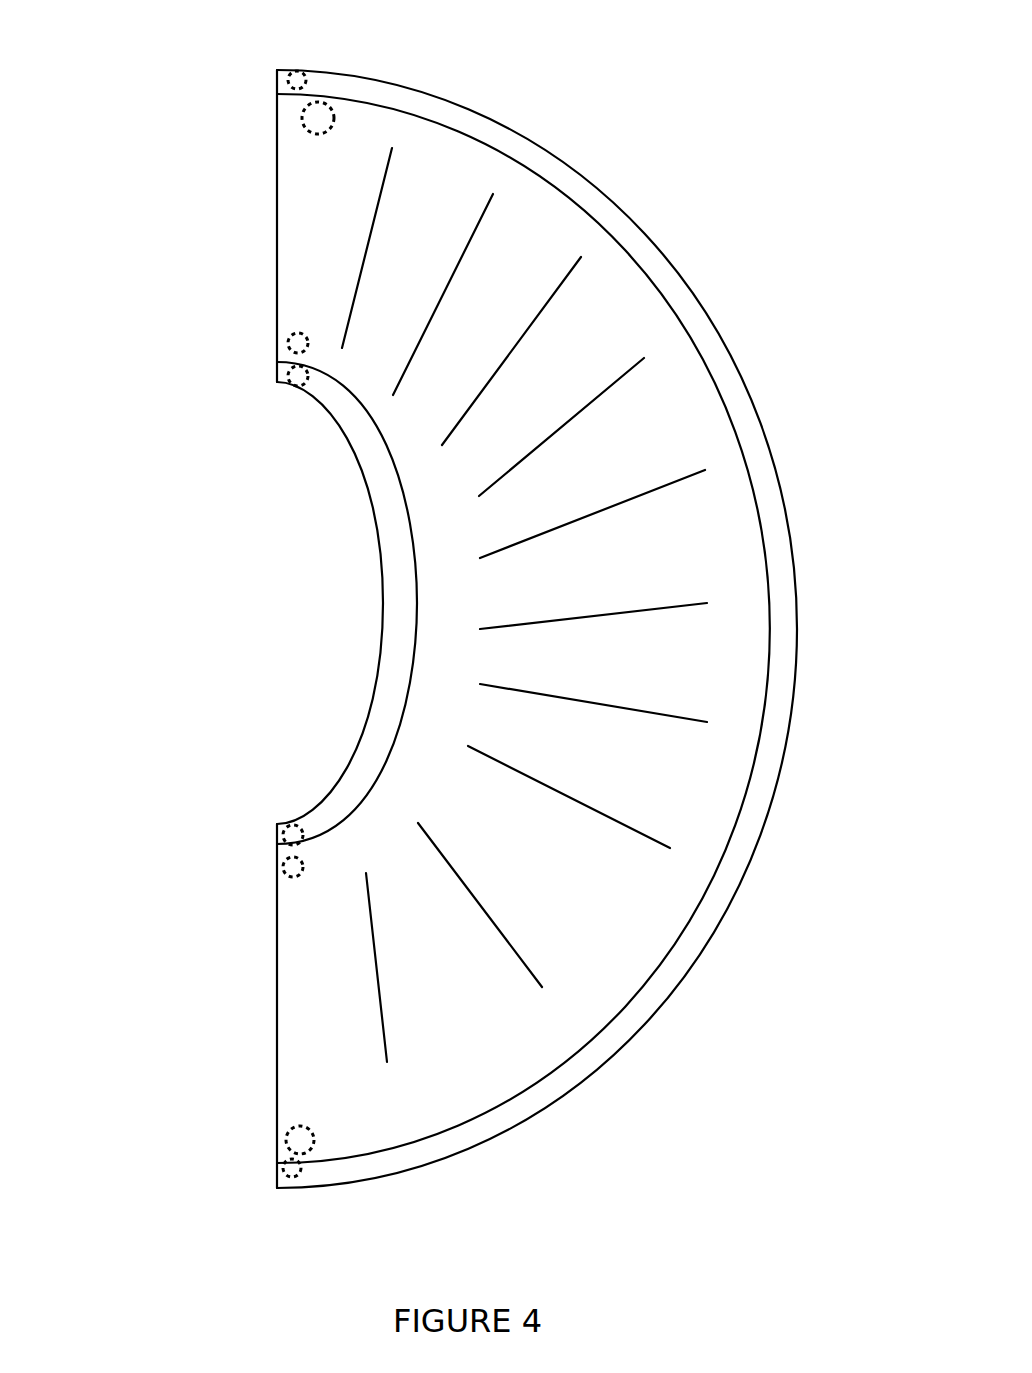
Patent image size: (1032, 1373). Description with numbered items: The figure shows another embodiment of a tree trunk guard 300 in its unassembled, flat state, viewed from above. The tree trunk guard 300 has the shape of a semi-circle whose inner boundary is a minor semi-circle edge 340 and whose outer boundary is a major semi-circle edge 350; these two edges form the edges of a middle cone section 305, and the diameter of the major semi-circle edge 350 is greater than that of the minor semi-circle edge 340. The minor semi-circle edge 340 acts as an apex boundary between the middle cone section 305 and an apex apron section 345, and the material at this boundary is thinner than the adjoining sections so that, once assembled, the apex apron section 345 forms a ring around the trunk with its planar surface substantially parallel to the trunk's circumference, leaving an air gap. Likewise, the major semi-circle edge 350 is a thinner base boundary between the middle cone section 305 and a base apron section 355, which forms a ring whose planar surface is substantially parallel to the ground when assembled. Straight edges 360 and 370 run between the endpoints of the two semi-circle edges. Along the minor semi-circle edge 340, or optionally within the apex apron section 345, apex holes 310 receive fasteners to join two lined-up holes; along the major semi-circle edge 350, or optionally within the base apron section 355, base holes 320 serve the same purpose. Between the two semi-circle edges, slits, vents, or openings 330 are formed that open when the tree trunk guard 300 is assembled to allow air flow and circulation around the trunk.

The tree trunk guard 300 is at (72, 638).
The middle cone section 305 is at (562, 873).
The apex holes 310 is at (300, 366).
The base holes 320 is at (322, 105).
The slits, vents, or openings 330 is at (670, 482).
The minor semi-circle edge 340 is at (417, 557).
The apex apron section 345 is at (392, 647).
The major semi-circle edge 350 is at (770, 630).
The base apron section 355 is at (735, 387).
The edge 360 is at (277, 250).
The edge 370 is at (278, 995).